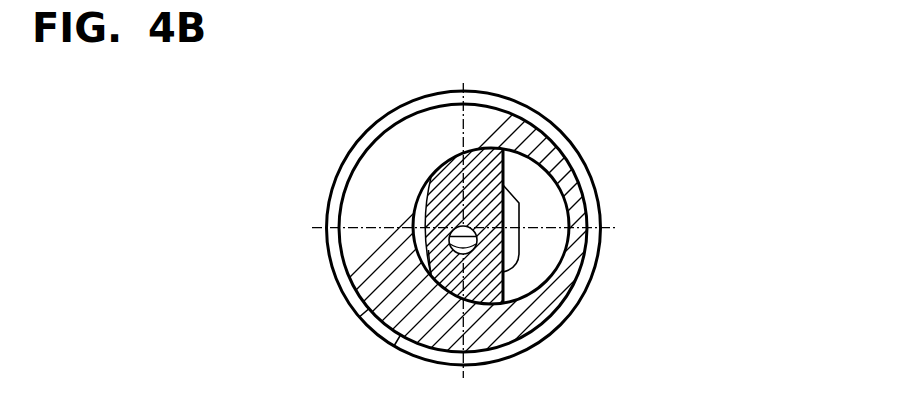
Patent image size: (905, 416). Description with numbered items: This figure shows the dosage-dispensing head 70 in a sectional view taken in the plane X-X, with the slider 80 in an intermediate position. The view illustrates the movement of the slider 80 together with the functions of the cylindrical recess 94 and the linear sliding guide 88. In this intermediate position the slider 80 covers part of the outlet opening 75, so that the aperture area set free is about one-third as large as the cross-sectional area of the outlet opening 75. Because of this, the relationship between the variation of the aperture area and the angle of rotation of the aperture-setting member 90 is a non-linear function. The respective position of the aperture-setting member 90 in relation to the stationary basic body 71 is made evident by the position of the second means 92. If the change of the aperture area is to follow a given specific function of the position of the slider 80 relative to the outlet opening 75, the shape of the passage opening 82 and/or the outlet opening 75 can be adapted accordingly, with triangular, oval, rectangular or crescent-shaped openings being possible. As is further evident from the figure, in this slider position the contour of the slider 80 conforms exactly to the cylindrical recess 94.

The dosage-dispensing head 70 is at (622, 137).
The stationary basic body 71 is at (543, 254).
The outlet opening 75 is at (478, 233).
The slider 80 is at (487, 286).
The passage opening 82 is at (445, 251).
The linear sliding guide 88 is at (508, 199).
The aperture-setting member 90 is at (378, 182).
The second means 92 is at (380, 325).
The cylindrical recess 94 is at (412, 215).